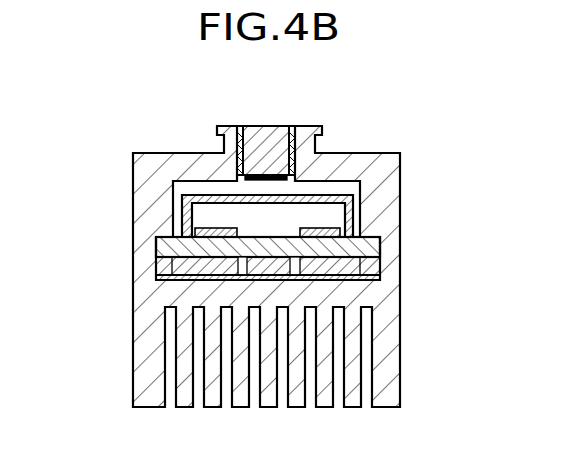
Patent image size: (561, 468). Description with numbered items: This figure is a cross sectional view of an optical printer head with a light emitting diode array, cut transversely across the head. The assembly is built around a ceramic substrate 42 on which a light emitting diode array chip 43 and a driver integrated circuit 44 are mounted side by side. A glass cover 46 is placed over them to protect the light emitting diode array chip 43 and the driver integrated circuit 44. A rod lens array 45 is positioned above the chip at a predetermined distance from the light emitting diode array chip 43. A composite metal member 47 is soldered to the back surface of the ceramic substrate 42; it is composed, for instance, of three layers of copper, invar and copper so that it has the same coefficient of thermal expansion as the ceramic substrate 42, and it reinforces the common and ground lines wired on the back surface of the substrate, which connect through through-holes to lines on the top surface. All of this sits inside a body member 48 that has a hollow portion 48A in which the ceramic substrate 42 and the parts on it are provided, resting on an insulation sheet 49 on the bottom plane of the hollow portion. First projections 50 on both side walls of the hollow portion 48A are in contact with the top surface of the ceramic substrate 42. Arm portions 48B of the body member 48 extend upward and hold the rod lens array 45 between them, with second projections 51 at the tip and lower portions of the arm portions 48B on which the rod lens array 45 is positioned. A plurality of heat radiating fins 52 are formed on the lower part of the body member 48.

The ceramic substrate 42 is at (156, 263).
The light emitting diode array chip 43 is at (243, 176).
The driver integrated circuit 44 is at (260, 225).
The rod lens array 45 is at (272, 125).
The glass cover 46 is at (353, 200).
The composite metal member 47 is at (380, 268).
The body member 48 is at (133, 325).
The hollow portion 48A is at (360, 181).
The arm portions 48B is at (240, 125).
The insulation sheet 49 is at (372, 278).
The first projections 50 is at (170, 238).
The second projections 51 is at (221, 149).
The heat radiating fins 52 is at (262, 398).